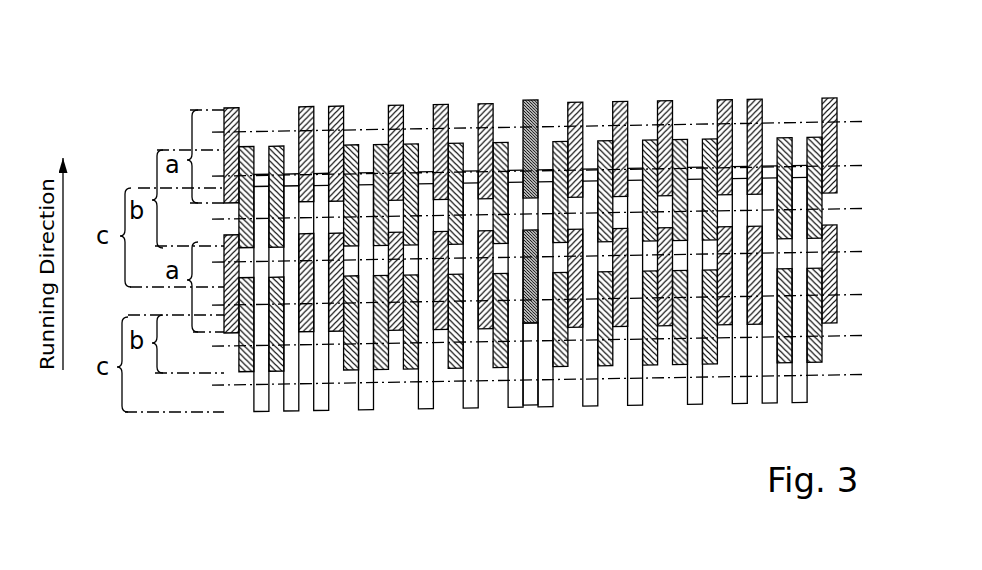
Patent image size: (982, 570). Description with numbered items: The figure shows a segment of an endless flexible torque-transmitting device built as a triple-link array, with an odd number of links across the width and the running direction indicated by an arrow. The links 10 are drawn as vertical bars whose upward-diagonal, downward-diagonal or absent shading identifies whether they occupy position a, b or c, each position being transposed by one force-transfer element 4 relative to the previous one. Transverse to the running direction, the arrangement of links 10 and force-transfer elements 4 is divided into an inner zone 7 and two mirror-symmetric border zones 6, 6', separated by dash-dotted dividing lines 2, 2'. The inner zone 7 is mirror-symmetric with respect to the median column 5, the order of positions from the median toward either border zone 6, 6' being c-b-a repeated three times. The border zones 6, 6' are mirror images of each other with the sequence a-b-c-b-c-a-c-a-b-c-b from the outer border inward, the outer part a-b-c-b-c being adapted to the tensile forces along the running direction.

The border zone 6 is at (263, 214).
The dash-dotted dividing line 2 is at (393, 187).
The links 10 is at (470, 195).
The inner zone 7 is at (530, 100).
The force-transfer element 4 is at (598, 108).
The dash-dotted dividing line 2' is at (672, 183).
The border zone 6' is at (814, 205).
The median column 5 is at (532, 380).